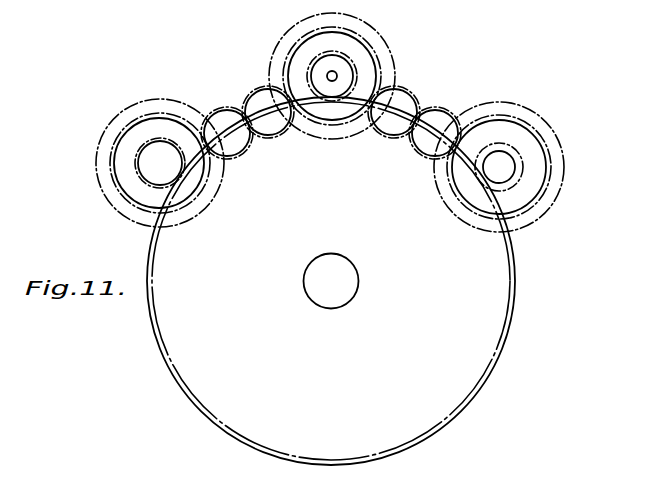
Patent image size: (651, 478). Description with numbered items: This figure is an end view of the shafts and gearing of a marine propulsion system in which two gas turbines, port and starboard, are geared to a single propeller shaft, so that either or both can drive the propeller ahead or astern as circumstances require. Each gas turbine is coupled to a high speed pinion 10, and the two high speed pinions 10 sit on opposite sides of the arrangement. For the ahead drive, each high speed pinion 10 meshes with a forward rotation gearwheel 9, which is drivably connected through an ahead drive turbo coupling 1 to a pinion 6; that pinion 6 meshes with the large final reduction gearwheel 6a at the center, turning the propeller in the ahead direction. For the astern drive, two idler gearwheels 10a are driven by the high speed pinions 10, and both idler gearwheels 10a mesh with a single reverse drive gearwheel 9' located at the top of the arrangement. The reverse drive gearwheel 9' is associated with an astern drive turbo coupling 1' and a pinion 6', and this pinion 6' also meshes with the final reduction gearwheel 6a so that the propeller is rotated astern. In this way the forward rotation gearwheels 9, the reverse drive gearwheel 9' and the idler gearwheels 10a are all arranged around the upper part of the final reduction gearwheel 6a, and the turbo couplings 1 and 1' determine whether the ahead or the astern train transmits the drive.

The ahead drive turbo coupling 1 is at (329, 165).
The astern drive turbo coupling 1' is at (350, 76).
The pinion 6 is at (319, 143).
The pinion 6' is at (297, 60).
The final reduction gearwheel 6a is at (513, 262).
The forward rotation gearwheel 9 is at (320, 143).
The reverse drive gearwheel 9' is at (347, 64).
The high speed pinion 10 is at (220, 110).
The idler gearwheel 10a is at (253, 90).